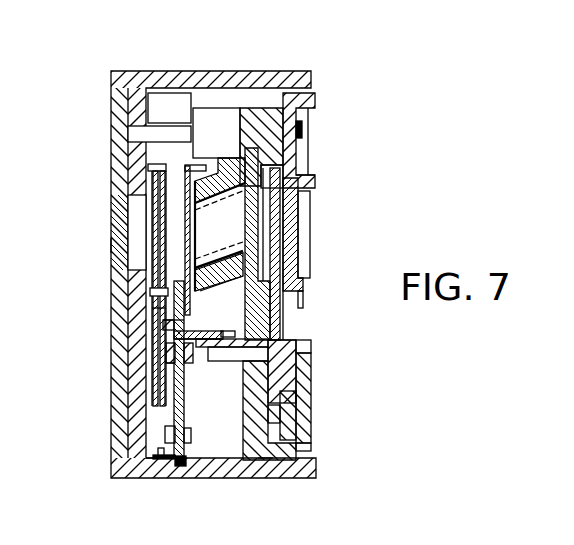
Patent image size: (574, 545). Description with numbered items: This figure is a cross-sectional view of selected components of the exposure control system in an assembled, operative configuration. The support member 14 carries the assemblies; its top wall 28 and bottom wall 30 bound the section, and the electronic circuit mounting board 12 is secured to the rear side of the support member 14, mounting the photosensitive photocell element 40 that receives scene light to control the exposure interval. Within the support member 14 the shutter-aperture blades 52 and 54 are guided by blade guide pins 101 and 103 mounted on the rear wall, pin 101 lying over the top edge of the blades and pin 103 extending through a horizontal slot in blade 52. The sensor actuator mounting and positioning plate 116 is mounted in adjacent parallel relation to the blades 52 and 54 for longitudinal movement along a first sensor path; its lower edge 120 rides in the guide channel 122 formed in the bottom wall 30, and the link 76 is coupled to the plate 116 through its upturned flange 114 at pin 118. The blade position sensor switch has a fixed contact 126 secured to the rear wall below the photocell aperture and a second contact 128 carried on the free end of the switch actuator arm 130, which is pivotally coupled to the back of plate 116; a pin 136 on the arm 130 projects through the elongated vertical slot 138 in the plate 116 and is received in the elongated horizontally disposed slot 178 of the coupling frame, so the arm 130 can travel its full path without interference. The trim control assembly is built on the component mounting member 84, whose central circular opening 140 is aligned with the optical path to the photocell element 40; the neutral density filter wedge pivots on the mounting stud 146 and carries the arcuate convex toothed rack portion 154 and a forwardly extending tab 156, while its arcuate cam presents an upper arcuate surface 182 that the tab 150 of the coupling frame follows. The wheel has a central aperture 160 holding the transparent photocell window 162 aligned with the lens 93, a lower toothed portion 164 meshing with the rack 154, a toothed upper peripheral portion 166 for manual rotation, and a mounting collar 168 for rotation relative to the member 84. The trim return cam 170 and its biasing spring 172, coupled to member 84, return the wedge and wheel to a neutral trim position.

The electronic circuit mounting board 12 is at (102, 121).
The support member 14 is at (98, 62).
The top wall 28 is at (200, 63).
The bottom wall 30 is at (223, 470).
The photosensitive photocell element 40 is at (103, 238).
The blade 52 is at (157, 211).
The blade 54 is at (158, 212).
The link 76 is at (155, 452).
The component mounting member 84 is at (188, 96).
The lens 93 is at (230, 300).
The blade guide pin 101 is at (152, 156).
The blade guide pin 103 is at (143, 283).
The upturned flange 114 is at (130, 450).
The sensor actuator mounting and positioning plate 116 is at (176, 408).
The pin 118 is at (158, 425).
The lower edge 120 is at (173, 459).
The guide channel 122 is at (177, 450).
The fixed contact 126 is at (158, 326).
The second contact 128 is at (160, 342).
The switch actuator arm 130 is at (168, 275).
The pin 136 is at (185, 346).
The elongated vertical slot 138 is at (158, 350).
The central circular opening 140 is at (223, 253).
The mounting stud 146 is at (258, 451).
The tab 150 is at (152, 322).
The arcuate convex toothed rack portion 154 is at (280, 333).
The forwardly extending tab 156 is at (314, 368).
The central aperture 160 is at (298, 212).
The transparent photocell window 162 is at (291, 185).
The lower toothed portion 164 is at (284, 327).
The upper peripheral portion 166 is at (322, 83).
The mounting collar 168 is at (293, 166).
The trim return cam 170 is at (314, 403).
The biasing spring 172 is at (296, 288).
The elongated horizontally disposed slot 178 is at (184, 357).
The upper arcuate surface 182 is at (290, 334).